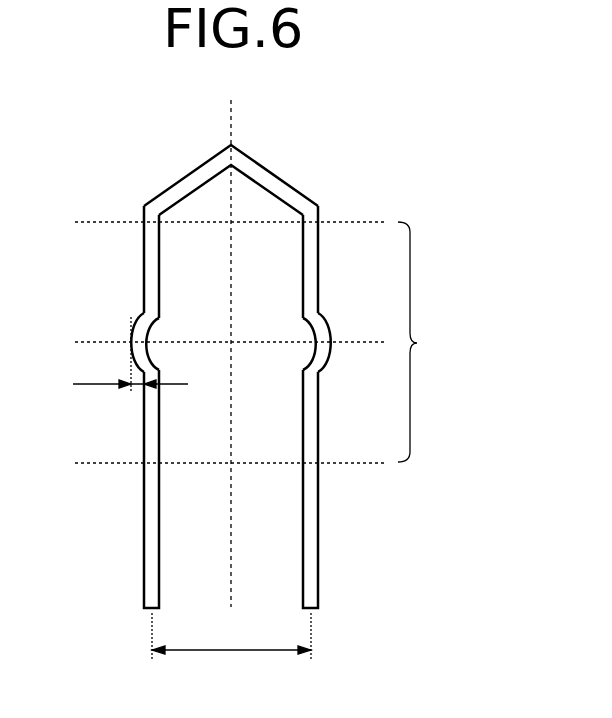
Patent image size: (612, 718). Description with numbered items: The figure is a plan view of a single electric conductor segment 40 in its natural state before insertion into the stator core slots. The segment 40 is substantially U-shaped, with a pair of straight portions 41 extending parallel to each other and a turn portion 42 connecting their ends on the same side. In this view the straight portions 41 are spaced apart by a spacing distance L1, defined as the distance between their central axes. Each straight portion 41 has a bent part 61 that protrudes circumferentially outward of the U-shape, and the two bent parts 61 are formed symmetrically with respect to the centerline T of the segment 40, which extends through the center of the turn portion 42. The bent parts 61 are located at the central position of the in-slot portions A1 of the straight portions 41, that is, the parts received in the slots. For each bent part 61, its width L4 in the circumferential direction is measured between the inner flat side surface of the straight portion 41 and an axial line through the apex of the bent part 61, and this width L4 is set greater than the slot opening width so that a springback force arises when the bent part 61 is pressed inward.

The electric conductor segment 40 is at (234, 350).
The turn portion 42 is at (298, 187).
The straight portions 41 is at (144, 556).
The bent part 61 is at (140, 313).
The centerline T is at (233, 118).
The in-slot portions A1 is at (433, 342).
The width of the bent part L4 is at (130, 355).
The spacing distance L1 is at (231, 649).